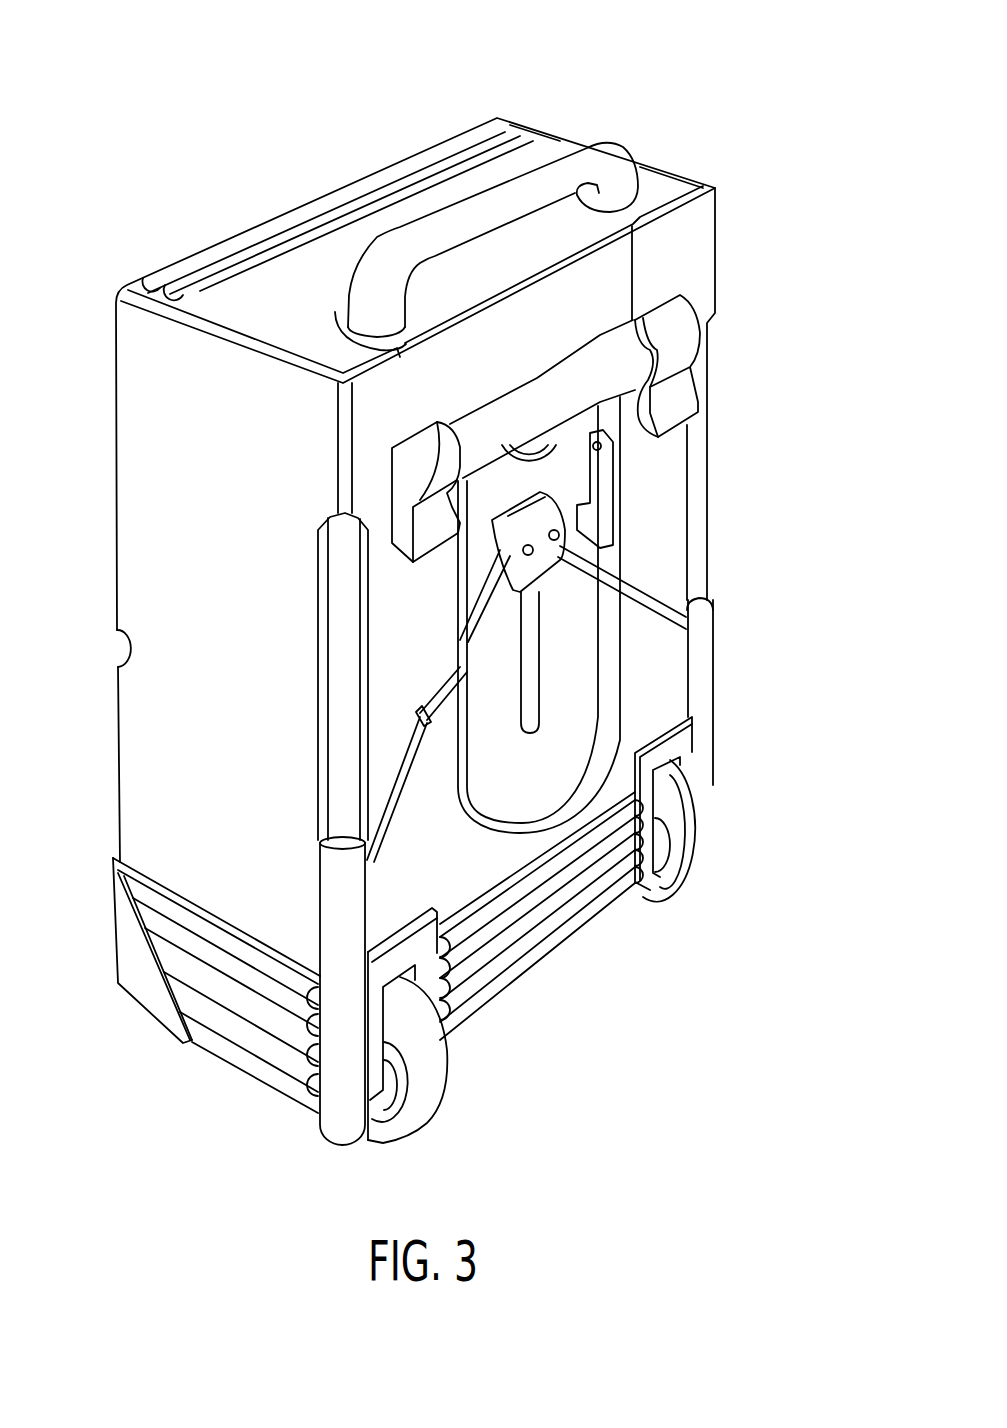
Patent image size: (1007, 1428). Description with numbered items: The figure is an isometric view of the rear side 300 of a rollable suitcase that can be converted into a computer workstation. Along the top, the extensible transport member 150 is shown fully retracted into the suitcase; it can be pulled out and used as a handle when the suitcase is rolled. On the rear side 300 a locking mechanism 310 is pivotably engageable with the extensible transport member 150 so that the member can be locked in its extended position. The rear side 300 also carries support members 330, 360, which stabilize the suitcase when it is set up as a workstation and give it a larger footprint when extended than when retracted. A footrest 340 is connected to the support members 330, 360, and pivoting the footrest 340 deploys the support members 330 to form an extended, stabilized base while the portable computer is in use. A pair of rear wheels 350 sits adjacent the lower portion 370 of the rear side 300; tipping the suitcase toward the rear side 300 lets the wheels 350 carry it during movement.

The extensible transport member 150 is at (582, 142).
The rear side 300 is at (652, 536).
The locking mechanism 310 is at (667, 322).
The support members 330 is at (337, 1080).
The footrest 340 is at (513, 413).
The rear wheels 350 is at (427, 1080).
The support members 360 is at (697, 757).
The lower portion 370 is at (280, 302).